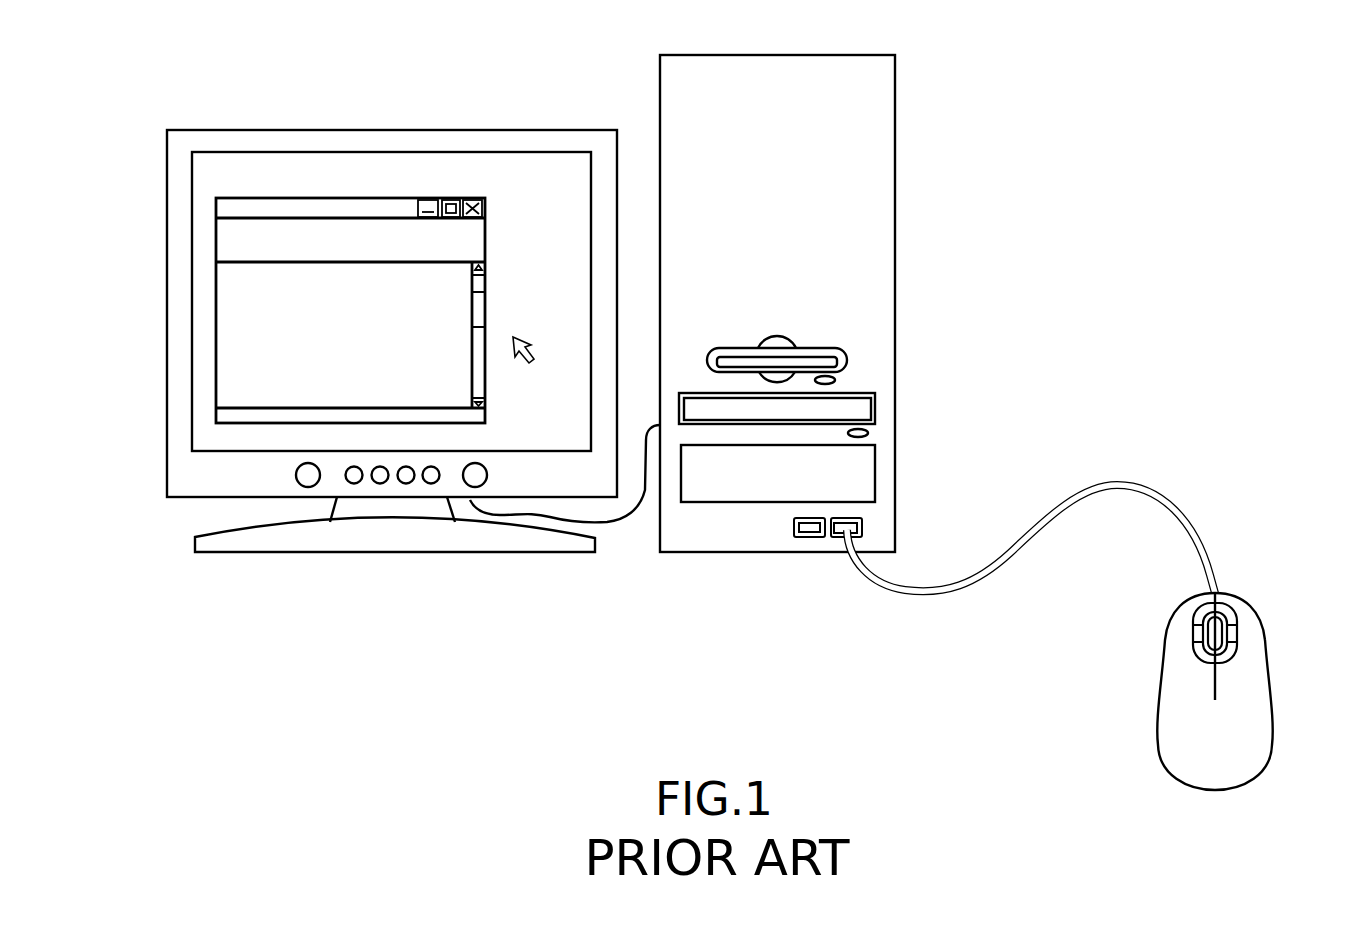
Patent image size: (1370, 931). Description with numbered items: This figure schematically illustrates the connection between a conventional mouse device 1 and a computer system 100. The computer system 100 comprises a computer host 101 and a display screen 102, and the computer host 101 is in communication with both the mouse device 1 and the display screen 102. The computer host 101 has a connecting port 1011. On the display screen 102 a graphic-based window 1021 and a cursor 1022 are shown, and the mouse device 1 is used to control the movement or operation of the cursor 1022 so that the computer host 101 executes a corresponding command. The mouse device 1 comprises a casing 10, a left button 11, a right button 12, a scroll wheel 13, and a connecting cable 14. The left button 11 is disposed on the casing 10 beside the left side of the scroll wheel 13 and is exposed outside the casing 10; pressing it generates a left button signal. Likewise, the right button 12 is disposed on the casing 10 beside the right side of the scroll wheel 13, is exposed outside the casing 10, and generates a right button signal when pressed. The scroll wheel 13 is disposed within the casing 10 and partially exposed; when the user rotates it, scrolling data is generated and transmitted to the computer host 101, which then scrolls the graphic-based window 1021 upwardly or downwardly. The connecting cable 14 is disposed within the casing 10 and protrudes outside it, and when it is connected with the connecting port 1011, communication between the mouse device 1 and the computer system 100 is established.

The mouse device 1 is at (1147, 625).
The casing 10 is at (1257, 704).
The left button 11 is at (1178, 633).
The right button 12 is at (1247, 633).
The scroll wheel 13 is at (1212, 617).
The connecting cable 14 is at (1118, 485).
The computer system 100 is at (689, 32).
The computer host 101 is at (782, 64).
The connecting port 1011 is at (797, 536).
The display screen 102 is at (497, 126).
The graphic-based window 1021 is at (302, 241).
The cursor 1022 is at (532, 361).